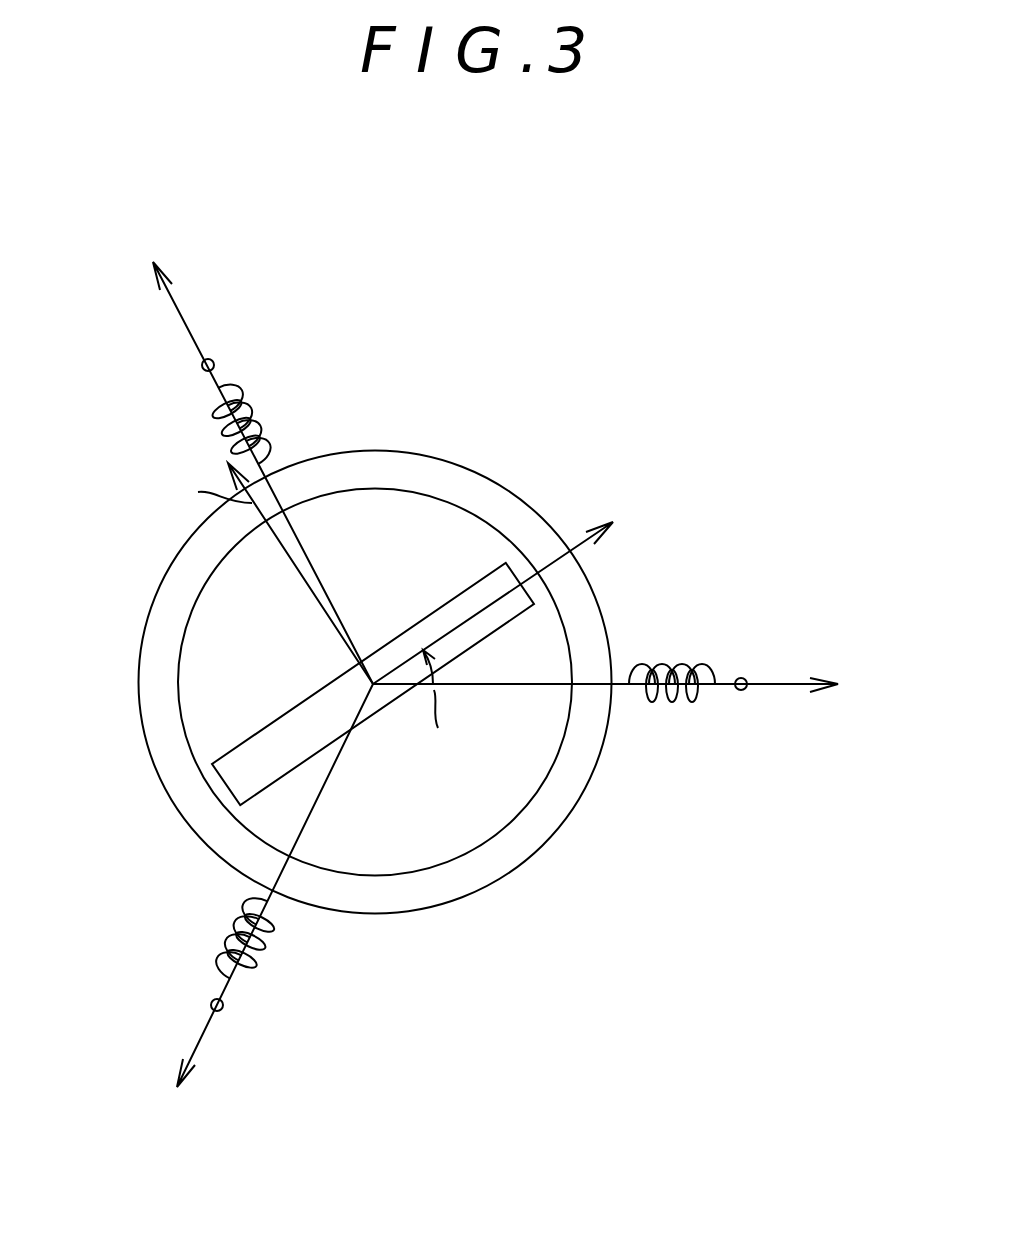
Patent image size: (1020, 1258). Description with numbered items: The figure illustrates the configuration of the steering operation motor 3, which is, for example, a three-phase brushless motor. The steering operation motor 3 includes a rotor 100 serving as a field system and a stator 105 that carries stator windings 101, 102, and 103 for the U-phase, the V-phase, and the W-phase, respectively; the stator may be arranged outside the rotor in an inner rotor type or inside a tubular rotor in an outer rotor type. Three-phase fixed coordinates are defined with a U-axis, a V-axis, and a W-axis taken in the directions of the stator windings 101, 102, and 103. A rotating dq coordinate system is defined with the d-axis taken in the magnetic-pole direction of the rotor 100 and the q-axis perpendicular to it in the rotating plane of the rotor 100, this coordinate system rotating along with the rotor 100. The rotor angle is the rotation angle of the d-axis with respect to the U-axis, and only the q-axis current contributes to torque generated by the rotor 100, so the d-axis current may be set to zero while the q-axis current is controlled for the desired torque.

The steering operation motor 3 is at (542, 335).
The rotor 100 is at (283, 735).
The stator winding for U-phase 101 is at (663, 665).
The stator winding for V-phase 102 is at (252, 396).
The stator winding for W-phase 103 is at (240, 940).
The stator 105 is at (562, 795).